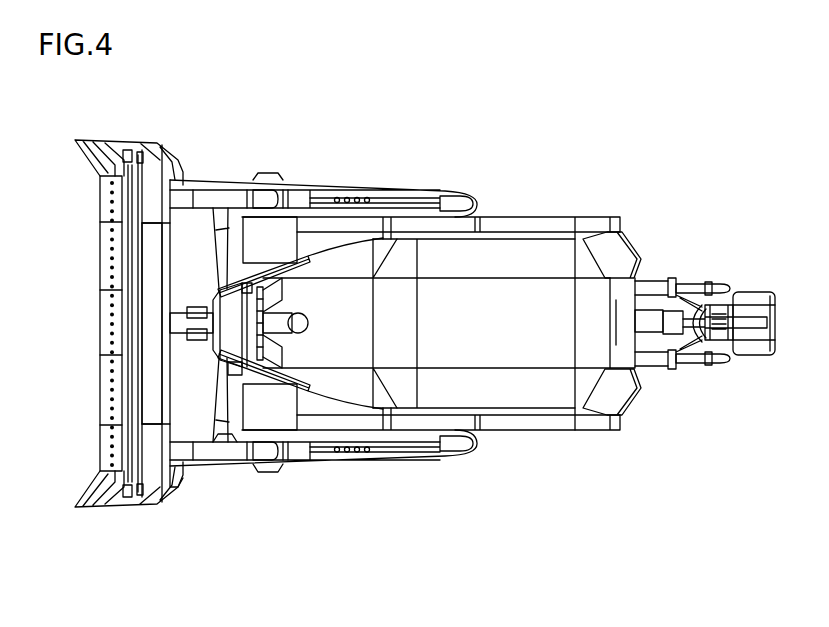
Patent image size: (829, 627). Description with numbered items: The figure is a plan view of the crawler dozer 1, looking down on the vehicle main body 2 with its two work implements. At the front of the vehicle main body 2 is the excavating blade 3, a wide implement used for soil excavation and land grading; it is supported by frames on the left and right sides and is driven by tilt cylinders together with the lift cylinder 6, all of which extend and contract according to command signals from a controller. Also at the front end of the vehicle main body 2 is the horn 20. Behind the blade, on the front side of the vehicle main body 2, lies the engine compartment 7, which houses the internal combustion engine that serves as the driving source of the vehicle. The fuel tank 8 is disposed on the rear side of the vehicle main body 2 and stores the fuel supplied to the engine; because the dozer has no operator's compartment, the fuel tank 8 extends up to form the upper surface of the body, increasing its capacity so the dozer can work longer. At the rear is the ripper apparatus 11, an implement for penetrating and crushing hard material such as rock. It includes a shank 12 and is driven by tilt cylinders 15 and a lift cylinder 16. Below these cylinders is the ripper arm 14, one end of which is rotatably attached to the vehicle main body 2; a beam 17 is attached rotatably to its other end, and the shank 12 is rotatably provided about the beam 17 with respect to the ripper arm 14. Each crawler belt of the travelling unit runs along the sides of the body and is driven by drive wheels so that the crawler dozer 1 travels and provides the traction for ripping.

The crawler dozer 1 is at (572, 120).
The vehicle main body 2 is at (500, 290).
The excavating blade 3 is at (107, 272).
The lift cylinder 6 is at (277, 320).
The engine compartment 7 is at (398, 322).
The fuel tank 8 is at (612, 258).
The ripper apparatus 11 is at (779, 269).
The shank 12 is at (769, 323).
The ripper arm 14 is at (680, 338).
The tilt cylinders 15 is at (658, 290).
The lift cylinder 16 is at (643, 323).
The beam 17 is at (753, 293).
The horn 20 is at (233, 342).